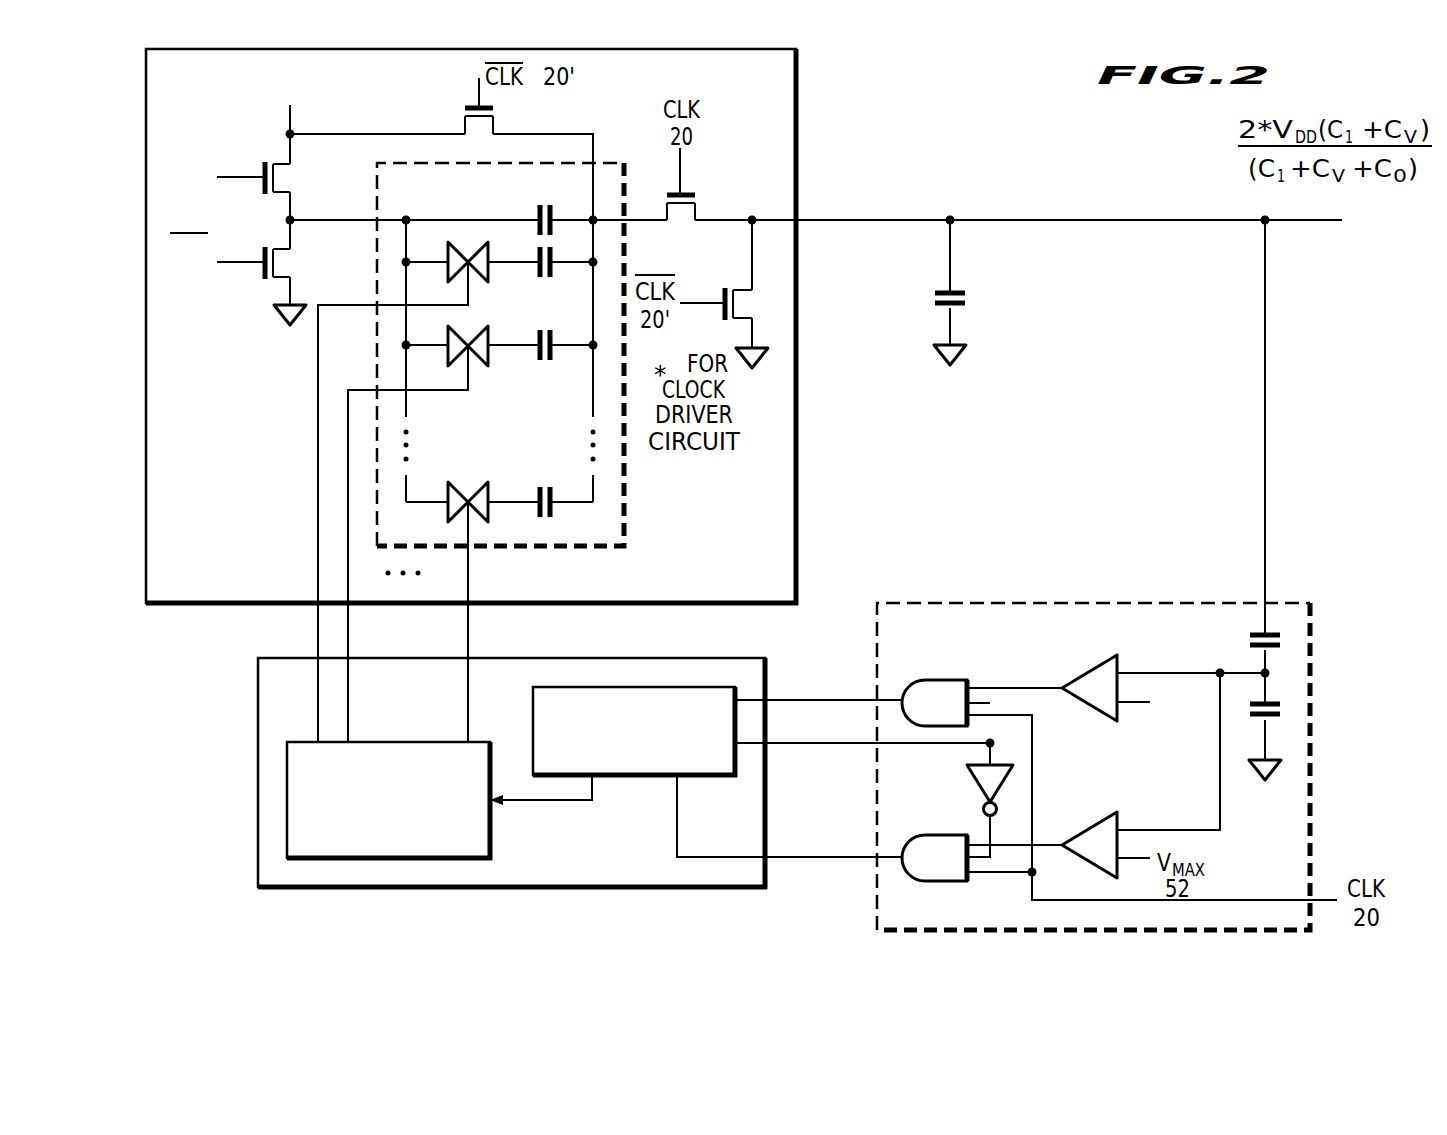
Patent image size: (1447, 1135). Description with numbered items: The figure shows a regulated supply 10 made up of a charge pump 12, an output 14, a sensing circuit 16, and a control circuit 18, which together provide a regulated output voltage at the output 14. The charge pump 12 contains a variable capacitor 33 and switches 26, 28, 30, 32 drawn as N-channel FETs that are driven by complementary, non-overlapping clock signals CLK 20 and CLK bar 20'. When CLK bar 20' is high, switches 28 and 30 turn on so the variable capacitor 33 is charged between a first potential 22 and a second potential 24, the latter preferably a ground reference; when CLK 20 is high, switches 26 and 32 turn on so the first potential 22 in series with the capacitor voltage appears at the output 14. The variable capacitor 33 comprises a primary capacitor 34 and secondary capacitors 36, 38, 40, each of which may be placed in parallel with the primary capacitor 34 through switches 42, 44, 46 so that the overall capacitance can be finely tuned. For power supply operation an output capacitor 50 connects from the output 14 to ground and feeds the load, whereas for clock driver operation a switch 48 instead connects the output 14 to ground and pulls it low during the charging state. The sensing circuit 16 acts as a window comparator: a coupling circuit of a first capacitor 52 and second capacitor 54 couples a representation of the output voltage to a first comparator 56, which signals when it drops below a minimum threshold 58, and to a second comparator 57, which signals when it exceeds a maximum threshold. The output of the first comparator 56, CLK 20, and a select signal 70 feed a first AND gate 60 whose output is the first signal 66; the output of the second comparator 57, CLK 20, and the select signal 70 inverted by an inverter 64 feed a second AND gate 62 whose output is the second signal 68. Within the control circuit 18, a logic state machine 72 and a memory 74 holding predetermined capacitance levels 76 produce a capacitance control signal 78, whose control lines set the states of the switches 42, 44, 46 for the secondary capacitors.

The regulated supply 10 is at (1140, 151).
The charge pump 12 is at (800, 100).
The output 14 is at (1345, 223).
The sensing circuit 16 is at (1105, 602).
The control circuit 18 is at (258, 822).
The clock signal CLK 20 is at (217, 178).
The complementary clock signal CLK bar 20' is at (217, 263).
The first potential VDD 22 is at (276, 94).
The second potential VSS 24 is at (275, 326).
The switch 26 is at (264, 194).
The switch 28 is at (264, 279).
The switch 30 is at (467, 107).
The switch 32 is at (695, 194).
The variable capacitor 33 is at (626, 500).
The primary capacitor C1 34 is at (540, 207).
The secondary capacitor 36 is at (549, 277).
The secondary capacitor 38 is at (549, 363).
The secondary capacitor 40 is at (537, 487).
The switch 42 is at (488, 277).
The switch 44 is at (488, 363).
The switch 46 is at (448, 490).
The switch 48 is at (726, 288).
The output capacitor Co 50 is at (1035, 292).
The first capacitor 52 is at (1252, 634).
The second capacitor 54 is at (1280, 716).
The first comparator 56 is at (1082, 672).
The second comparator 57 is at (1087, 822).
The minimum reference voltage VMIN 58 is at (1161, 719).
The first AND gate 60 is at (935, 680).
The second AND gate 62 is at (935, 836).
The inverter 64 is at (967, 780).
The first signal 66 is at (819, 660).
The second signal 68 is at (790, 859).
The select signal 70 is at (802, 771).
The logic state machine 72 is at (532, 708).
The memory 74 is at (543, 817).
The predetermined capacitance levels 76 is at (393, 742).
The capacitance control signal 78 is at (305, 632).